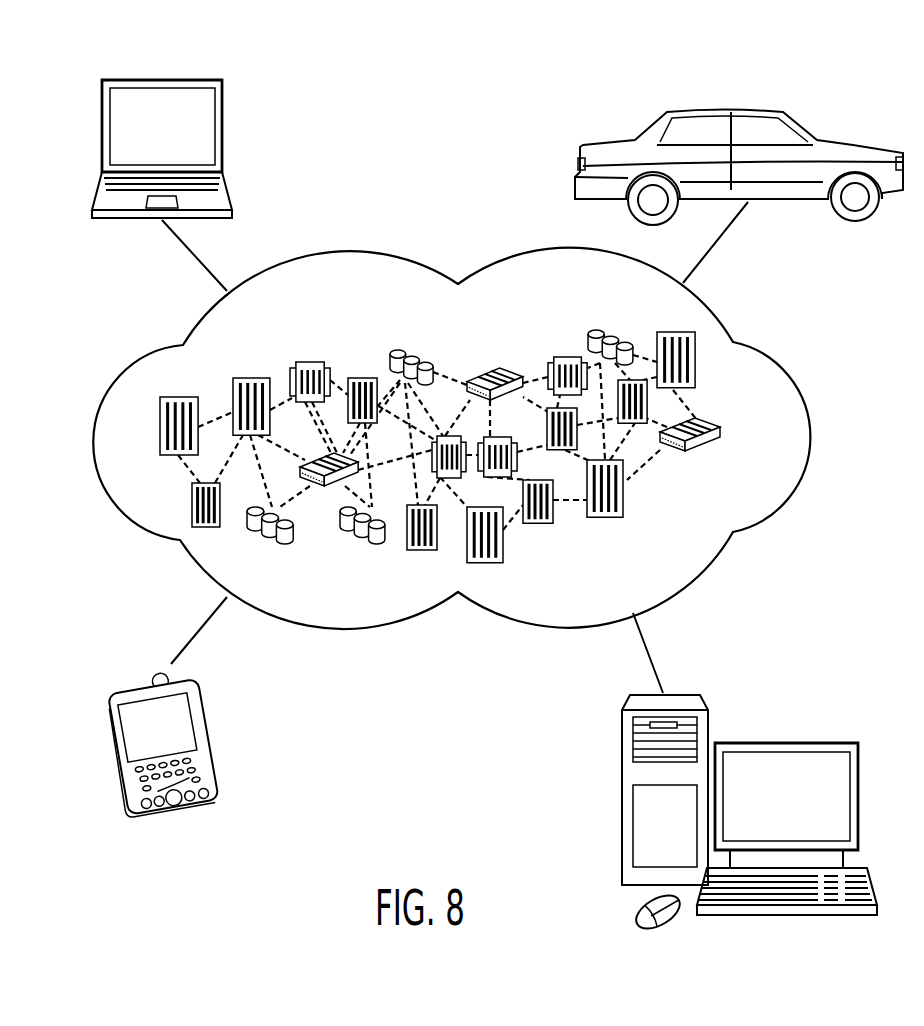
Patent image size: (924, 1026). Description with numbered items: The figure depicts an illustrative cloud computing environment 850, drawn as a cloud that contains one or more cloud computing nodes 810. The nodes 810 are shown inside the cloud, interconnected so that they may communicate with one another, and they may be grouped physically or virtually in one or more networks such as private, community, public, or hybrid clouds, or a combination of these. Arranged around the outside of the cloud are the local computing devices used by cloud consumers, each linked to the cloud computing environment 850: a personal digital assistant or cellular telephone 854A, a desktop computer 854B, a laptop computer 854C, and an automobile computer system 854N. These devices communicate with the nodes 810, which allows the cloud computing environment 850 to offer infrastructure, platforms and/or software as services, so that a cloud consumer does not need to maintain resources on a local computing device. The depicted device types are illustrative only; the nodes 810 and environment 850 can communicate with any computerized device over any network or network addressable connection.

The cloud computing environment 850 is at (788, 343).
The cloud computing node 810 is at (726, 434).
The laptop computer 854C is at (160, 78).
The automobile computer system 854N is at (724, 108).
The personal digital assistant (PDA) or cellular telephone 854A is at (141, 678).
The desktop computer 854B is at (787, 743).